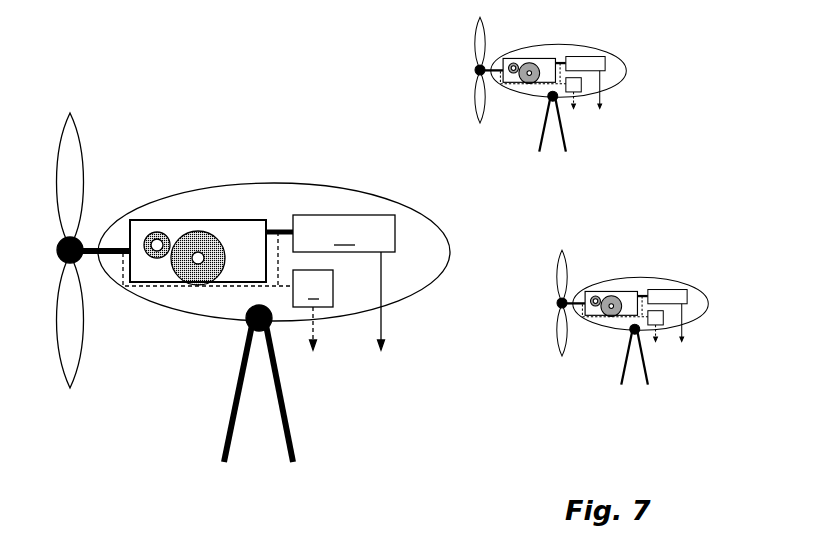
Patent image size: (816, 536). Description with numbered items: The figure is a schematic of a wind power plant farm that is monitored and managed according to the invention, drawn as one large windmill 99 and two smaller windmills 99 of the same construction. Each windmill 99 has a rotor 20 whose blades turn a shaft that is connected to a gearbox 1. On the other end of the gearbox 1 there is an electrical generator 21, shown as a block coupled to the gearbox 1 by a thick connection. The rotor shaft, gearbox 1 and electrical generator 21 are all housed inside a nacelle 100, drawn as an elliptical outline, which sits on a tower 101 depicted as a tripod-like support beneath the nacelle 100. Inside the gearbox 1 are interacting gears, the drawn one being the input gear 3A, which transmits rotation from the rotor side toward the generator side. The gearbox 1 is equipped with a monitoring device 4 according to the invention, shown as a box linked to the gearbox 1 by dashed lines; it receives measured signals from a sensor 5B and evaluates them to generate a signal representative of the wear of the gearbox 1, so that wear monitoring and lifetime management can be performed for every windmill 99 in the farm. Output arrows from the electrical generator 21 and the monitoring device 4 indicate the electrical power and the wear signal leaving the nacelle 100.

The windmill 99 is at (385, 249).
The nacelle 100 is at (273, 183).
The rotor 20 is at (77, 152).
The gearbox 1 is at (152, 220).
The electrical generator 21 is at (344, 233).
The monitoring device 4 is at (313, 288).
The sensor 5B is at (382, 333).
The input gear 3A is at (313, 327).
The tower 101 is at (288, 412).